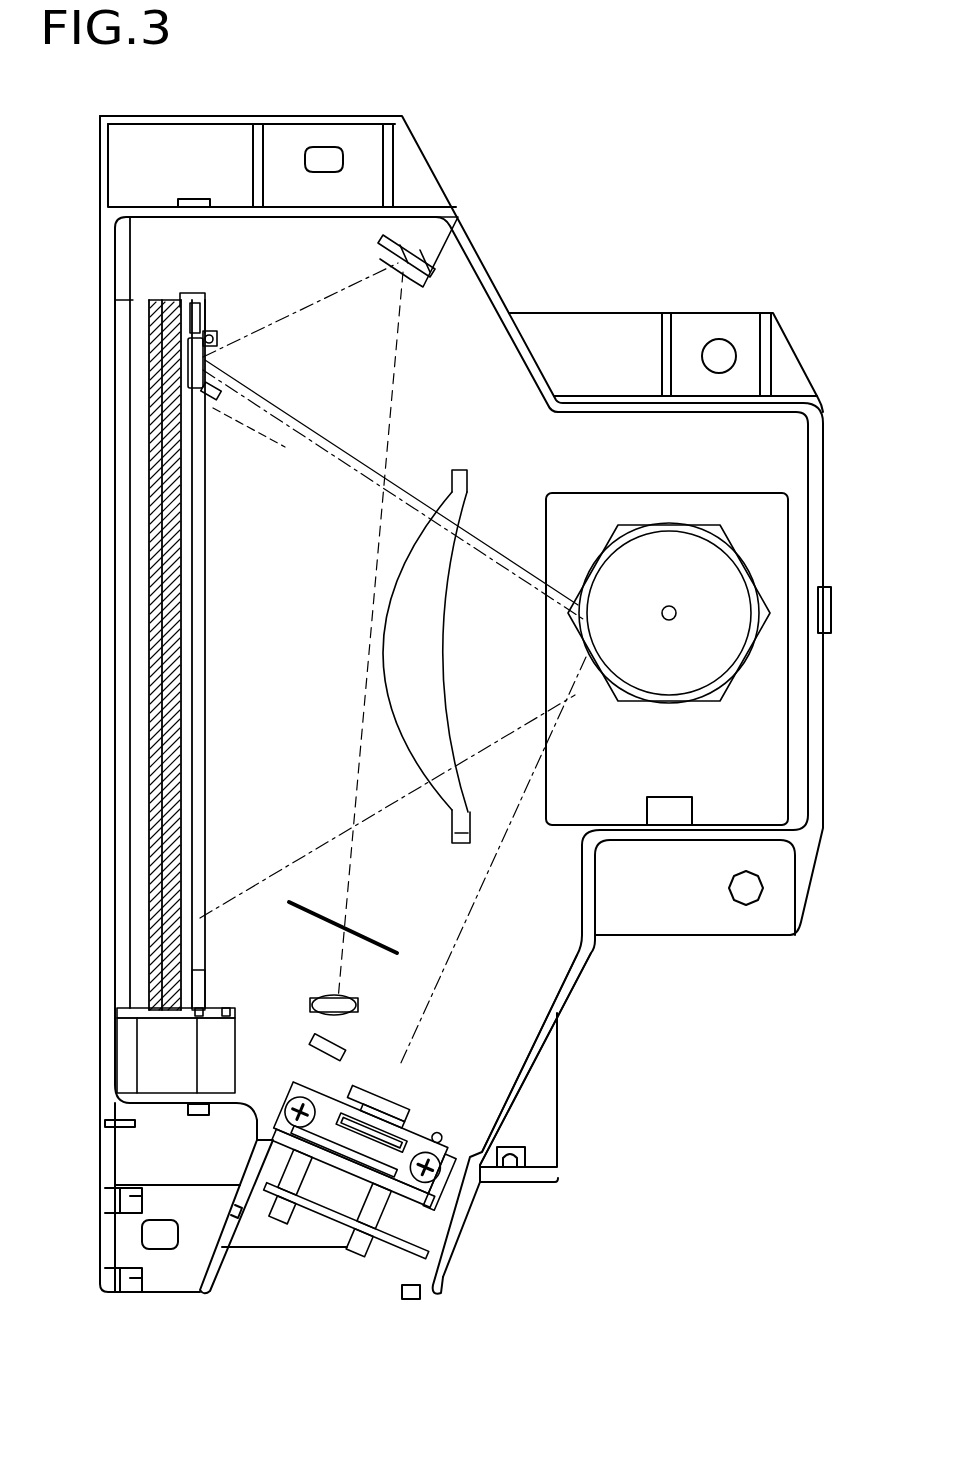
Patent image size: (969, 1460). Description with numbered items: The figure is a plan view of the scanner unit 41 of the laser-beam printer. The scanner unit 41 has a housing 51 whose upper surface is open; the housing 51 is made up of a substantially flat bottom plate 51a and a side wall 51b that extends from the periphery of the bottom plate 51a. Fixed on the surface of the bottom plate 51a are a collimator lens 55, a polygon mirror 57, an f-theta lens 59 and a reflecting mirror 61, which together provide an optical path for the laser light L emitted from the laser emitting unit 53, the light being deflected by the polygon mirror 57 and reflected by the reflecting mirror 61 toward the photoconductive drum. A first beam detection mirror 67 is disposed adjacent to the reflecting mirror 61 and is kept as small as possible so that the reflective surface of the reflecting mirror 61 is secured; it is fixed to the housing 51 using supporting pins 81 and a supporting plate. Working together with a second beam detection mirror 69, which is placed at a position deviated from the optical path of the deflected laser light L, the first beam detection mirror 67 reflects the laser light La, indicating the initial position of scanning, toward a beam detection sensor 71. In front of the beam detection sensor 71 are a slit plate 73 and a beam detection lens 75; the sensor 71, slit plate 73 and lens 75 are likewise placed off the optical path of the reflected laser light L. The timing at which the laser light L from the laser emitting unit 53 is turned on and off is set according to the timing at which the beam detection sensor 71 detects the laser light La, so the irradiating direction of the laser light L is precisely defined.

The scanner unit 41 is at (614, 274).
The housing 51 is at (590, 1059).
The bottom plate 51a is at (490, 981).
The side wall 51b is at (643, 975).
The laser emitting unit 53 is at (325, 1222).
The collimator lens 55 is at (387, 1095).
The polygon mirror 57 is at (629, 692).
The f-theta lens 59 is at (418, 662).
The reflecting mirror 61 is at (172, 672).
The first beam detection mirror 67 is at (190, 380).
The second beam detection mirror 69 is at (437, 255).
The beam detection sensor 71 is at (313, 1045).
The slit plate 73 is at (298, 902).
The beam detection lens 75 is at (308, 1003).
The supporting pins 81 is at (220, 332).
The laser light L is at (478, 913).
The laser light indicating initial position of scanning La is at (413, 470).